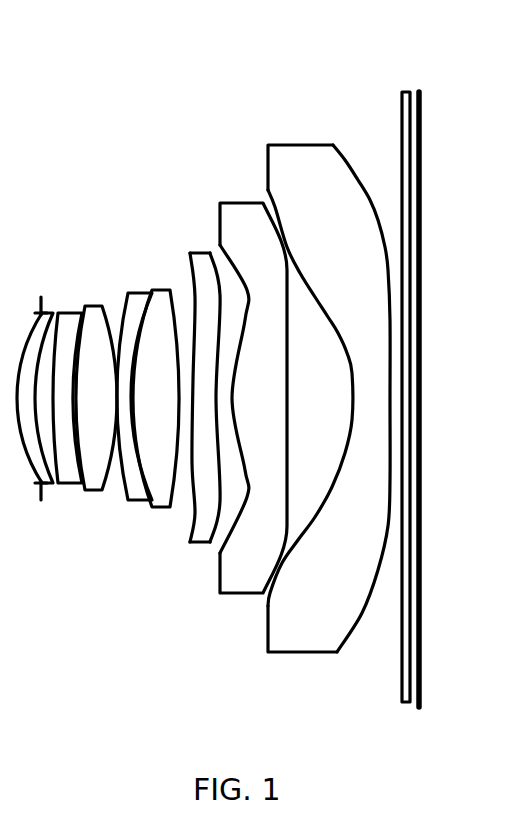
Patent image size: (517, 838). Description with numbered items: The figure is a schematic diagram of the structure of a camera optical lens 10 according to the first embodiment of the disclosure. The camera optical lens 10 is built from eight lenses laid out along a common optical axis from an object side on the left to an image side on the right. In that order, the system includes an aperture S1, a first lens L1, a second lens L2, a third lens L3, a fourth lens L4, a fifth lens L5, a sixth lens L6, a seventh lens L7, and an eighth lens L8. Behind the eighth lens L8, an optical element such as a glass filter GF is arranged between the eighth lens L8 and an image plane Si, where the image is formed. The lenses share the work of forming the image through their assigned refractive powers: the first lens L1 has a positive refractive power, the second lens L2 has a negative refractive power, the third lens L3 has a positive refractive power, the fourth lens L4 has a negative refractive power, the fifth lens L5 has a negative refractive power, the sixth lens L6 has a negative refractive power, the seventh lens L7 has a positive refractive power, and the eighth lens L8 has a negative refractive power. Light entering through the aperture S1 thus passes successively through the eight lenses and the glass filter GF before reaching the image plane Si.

The camera optical lens 10 is at (225, 354).
The aperture S1 is at (31, 402).
The first lens L1 is at (40, 410).
The second lens L2 is at (67, 385).
The third lens L3 is at (96, 385).
The fourth lens L4 is at (134, 387).
The fifth lens L5 is at (156, 386).
The sixth lens L6 is at (203, 387).
The seventh lens L7 is at (253, 385).
The eighth lens L8 is at (329, 387).
The glass filter GF is at (405, 387).
The image plane Si is at (427, 386).